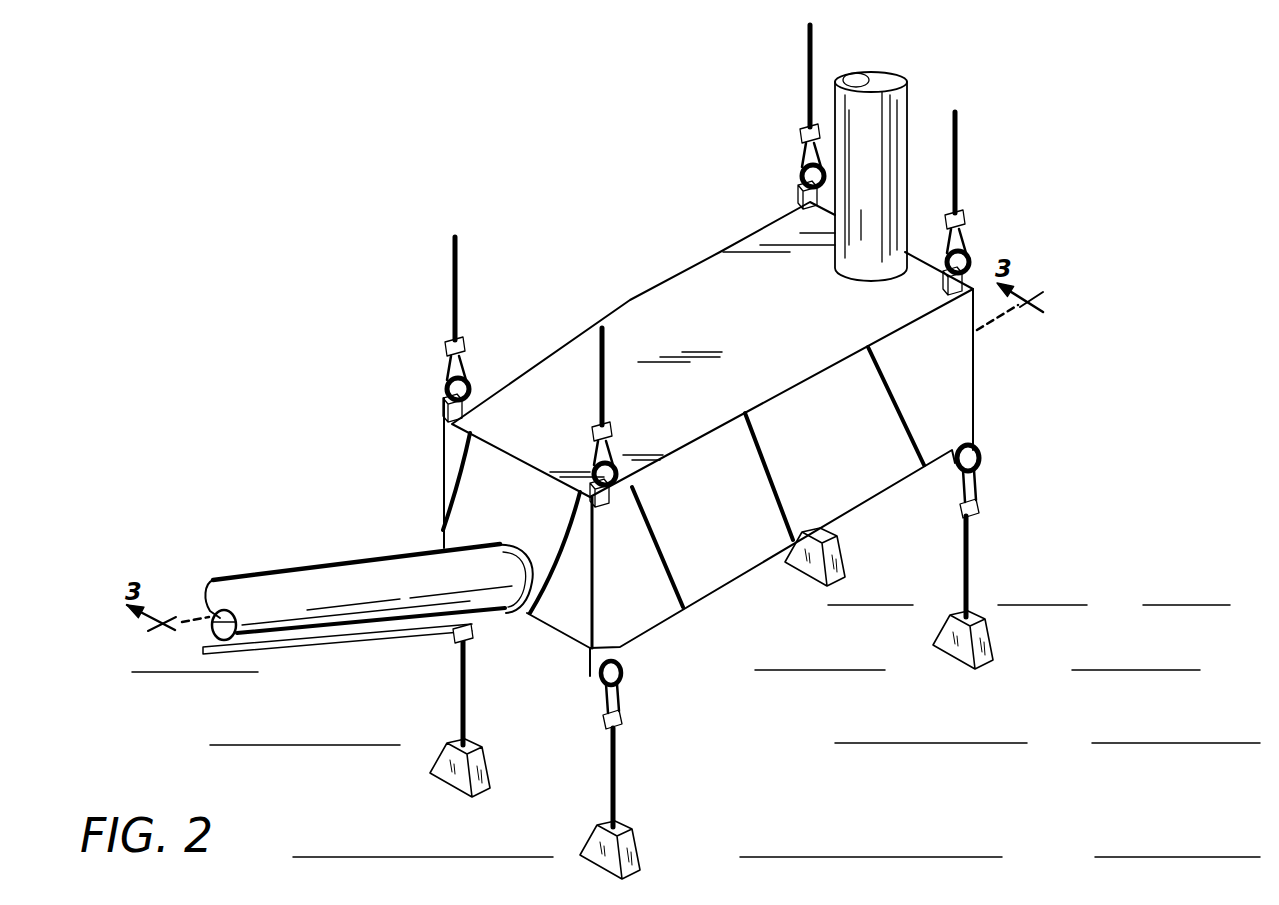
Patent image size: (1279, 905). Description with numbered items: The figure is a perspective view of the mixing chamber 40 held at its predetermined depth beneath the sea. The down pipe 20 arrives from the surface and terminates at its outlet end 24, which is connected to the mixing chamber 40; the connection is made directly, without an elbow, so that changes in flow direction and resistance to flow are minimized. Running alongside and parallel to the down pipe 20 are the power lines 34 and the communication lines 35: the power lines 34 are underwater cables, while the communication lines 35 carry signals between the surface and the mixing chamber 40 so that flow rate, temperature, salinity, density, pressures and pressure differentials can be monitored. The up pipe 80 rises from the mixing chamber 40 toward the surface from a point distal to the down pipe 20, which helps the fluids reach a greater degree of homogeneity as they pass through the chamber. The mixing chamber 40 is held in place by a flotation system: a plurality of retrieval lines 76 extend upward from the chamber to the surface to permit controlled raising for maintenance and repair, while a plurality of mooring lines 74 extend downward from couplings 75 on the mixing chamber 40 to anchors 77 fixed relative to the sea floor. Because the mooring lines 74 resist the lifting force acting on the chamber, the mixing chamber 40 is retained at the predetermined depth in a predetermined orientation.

The down pipe 20 is at (287, 580).
The outlet end 24 is at (504, 540).
The power lines 34 is at (293, 648).
The communication lines 35 is at (327, 640).
The mixing chamber 40 is at (963, 377).
The mooring lines 74 is at (468, 690).
The couplings 75 is at (624, 669).
The retrieval lines 76 is at (459, 263).
The anchors 77 is at (480, 773).
The up pipe 80 is at (906, 97).